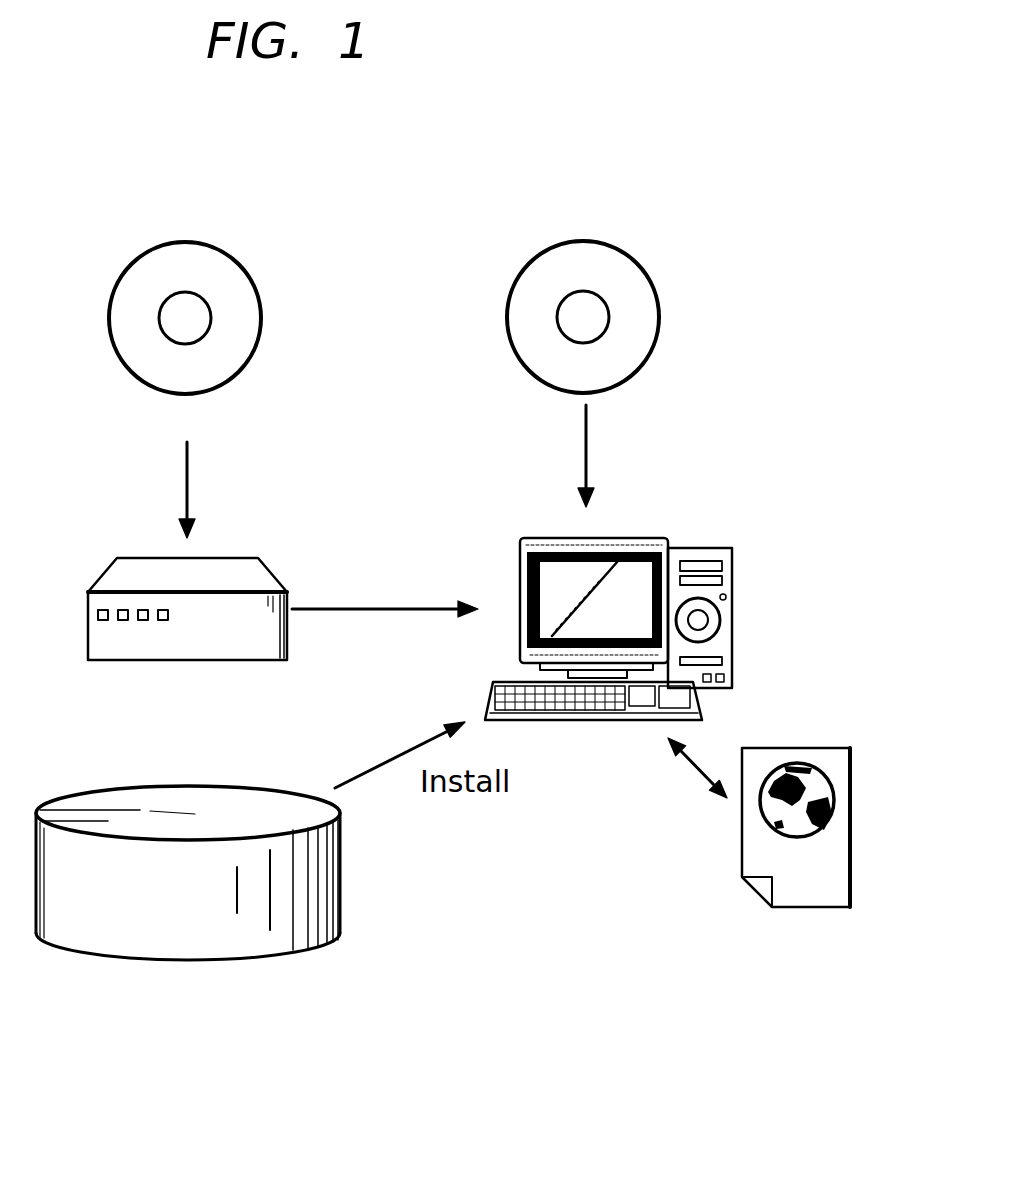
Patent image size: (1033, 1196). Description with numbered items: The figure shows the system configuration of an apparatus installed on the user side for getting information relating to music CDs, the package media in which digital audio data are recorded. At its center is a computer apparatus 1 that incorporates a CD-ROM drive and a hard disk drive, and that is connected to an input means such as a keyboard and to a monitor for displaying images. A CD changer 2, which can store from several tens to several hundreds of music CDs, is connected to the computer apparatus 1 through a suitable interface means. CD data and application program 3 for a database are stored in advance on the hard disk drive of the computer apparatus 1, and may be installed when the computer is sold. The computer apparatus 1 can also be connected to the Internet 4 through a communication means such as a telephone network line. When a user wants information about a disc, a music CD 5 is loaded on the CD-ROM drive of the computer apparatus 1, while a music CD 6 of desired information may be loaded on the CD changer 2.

The computer apparatus 1 is at (670, 541).
The CD changer 2 is at (242, 558).
The CD data and application program 3 is at (218, 957).
The Internet 4 is at (852, 817).
The music CD 5 is at (645, 270).
The music CD 6 is at (247, 270).